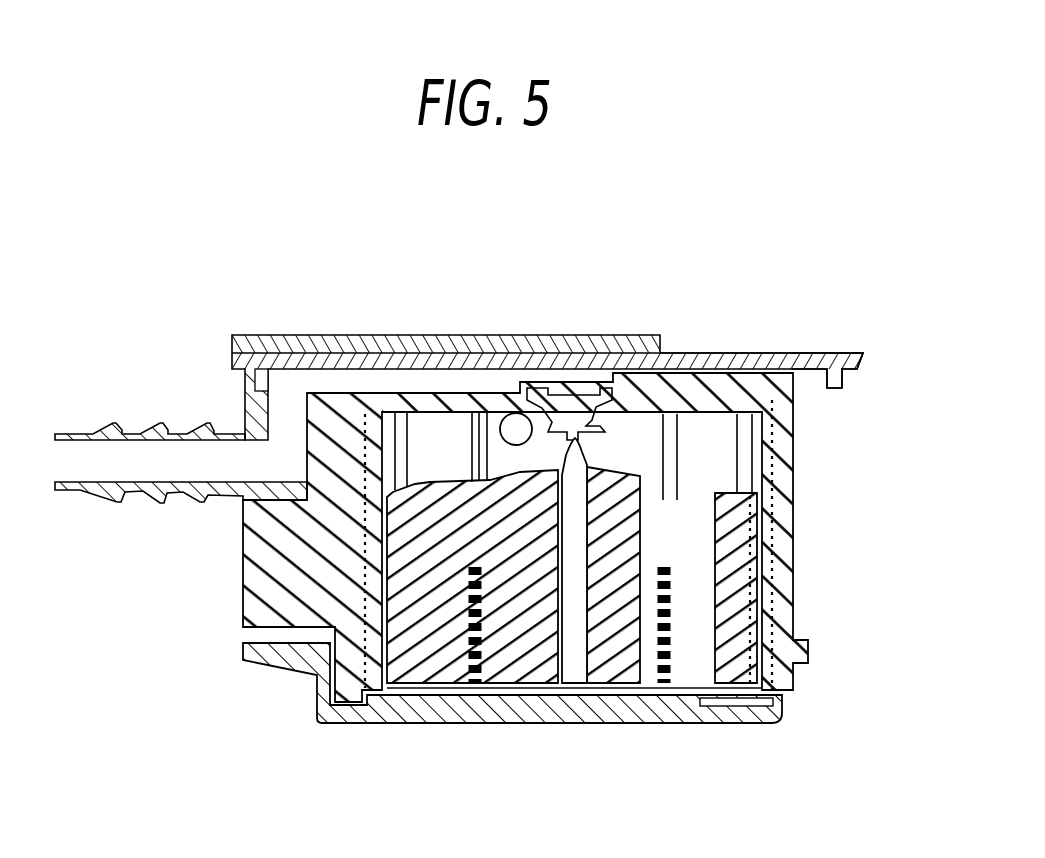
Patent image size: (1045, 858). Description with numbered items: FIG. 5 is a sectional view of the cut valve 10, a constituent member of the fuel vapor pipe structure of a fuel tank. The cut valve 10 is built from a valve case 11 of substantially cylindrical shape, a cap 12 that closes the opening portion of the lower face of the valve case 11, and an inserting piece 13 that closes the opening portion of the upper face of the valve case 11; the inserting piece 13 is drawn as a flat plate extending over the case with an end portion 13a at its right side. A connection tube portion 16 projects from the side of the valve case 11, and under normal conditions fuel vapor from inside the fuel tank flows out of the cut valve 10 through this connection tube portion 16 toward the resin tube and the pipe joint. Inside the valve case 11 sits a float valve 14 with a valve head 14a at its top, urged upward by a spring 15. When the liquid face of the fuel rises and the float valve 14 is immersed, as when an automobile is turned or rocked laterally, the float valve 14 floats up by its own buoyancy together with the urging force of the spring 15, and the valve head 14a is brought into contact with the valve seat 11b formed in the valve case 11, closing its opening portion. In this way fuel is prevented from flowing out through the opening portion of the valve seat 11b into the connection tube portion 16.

The cut valve 10 is at (612, 293).
The valve case 11 is at (302, 580).
The valve seat 11b is at (587, 448).
The cap 12 is at (341, 716).
The inserting piece 13 is at (216, 352).
The flange of cover plate 13a is at (836, 378).
The float valve 14 is at (744, 563).
The valve head 14a is at (590, 458).
The spring 15 is at (690, 616).
The connection tube portion 16 is at (140, 500).